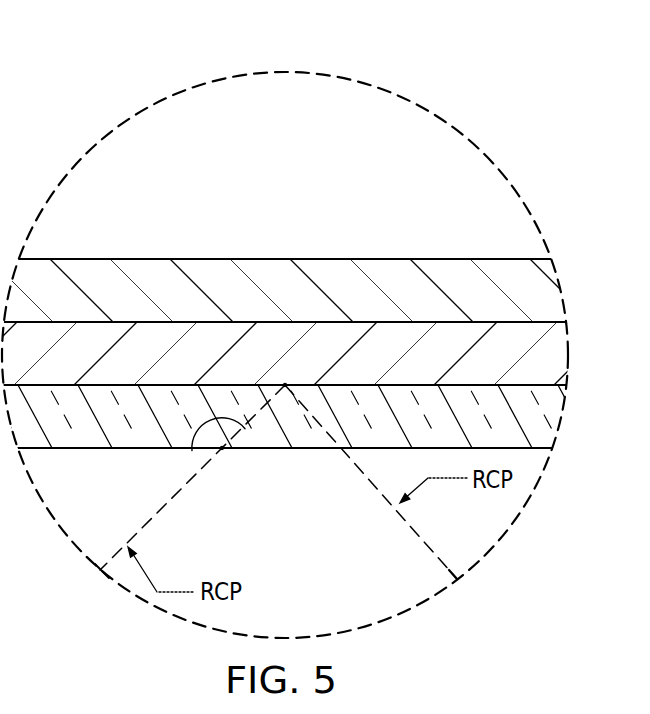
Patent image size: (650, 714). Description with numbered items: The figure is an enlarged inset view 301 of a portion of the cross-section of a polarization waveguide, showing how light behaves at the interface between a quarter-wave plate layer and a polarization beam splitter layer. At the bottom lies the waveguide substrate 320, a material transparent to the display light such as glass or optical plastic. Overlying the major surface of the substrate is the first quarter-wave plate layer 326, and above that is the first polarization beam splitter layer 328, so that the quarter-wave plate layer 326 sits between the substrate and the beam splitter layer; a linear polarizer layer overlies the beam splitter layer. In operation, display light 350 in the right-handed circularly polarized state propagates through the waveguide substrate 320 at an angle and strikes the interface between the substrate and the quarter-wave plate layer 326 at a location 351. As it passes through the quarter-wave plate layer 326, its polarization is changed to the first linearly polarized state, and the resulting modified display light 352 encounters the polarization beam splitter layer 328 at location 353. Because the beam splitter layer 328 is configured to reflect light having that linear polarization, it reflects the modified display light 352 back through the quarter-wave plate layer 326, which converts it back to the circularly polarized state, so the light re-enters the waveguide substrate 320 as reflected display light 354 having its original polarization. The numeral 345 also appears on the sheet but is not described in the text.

The enlarged inset view 301 is at (68, 72).
The polarization beam splitter layer 328 is at (557, 345).
The quarter-wave plate layer 326 is at (547, 423).
The waveguide substrate 320 is at (302, 562).
The location 353 is at (283, 385).
The modified display light 352 is at (190, 442).
The location 351 is at (222, 452).
The display light 350 is at (165, 508).
The reflected display light 354 is at (412, 523).
The reference element 345 is at (604, 696).